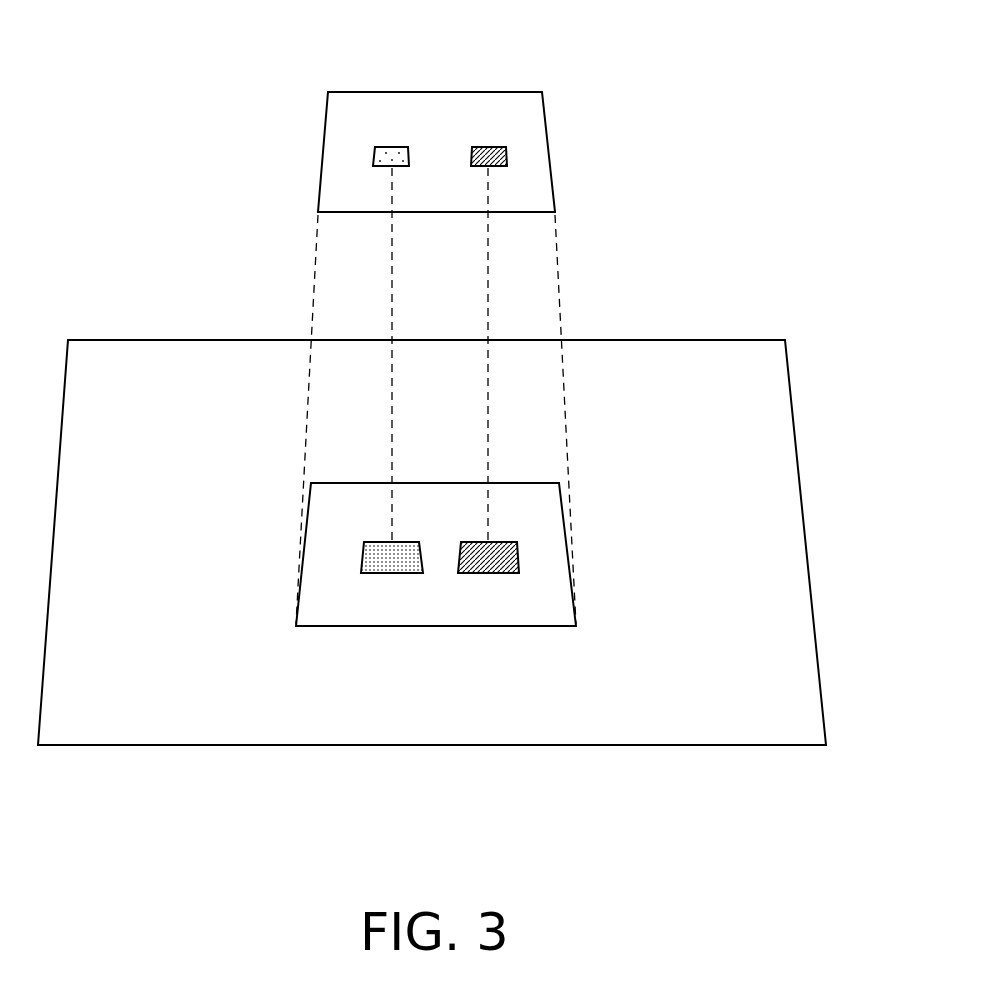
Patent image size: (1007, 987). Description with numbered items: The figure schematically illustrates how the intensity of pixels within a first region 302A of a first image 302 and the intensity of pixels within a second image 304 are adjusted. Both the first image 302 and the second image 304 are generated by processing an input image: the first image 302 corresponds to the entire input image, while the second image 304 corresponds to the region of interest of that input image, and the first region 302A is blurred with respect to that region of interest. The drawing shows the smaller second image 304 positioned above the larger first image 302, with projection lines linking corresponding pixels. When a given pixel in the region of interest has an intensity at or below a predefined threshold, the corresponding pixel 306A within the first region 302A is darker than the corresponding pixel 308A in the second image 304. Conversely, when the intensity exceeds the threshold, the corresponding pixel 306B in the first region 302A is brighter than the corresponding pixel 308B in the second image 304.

The first image 302 is at (773, 339).
The first region 302A is at (312, 626).
The second image 304 is at (542, 92).
The pixel 306A is at (391, 576).
The pixel 306B is at (489, 576).
The pixel 308A is at (372, 157).
The pixel 308B is at (508, 157).